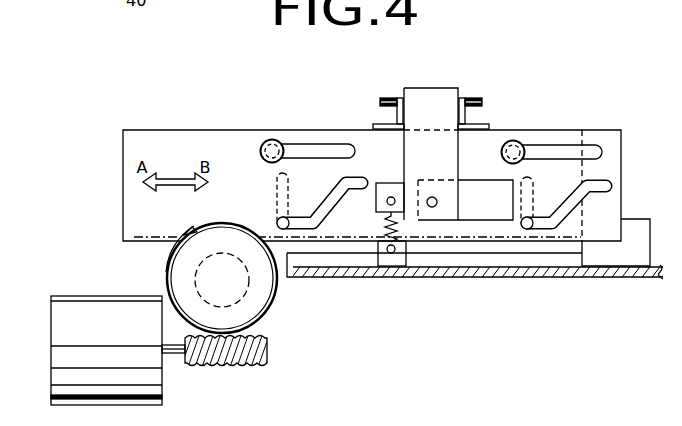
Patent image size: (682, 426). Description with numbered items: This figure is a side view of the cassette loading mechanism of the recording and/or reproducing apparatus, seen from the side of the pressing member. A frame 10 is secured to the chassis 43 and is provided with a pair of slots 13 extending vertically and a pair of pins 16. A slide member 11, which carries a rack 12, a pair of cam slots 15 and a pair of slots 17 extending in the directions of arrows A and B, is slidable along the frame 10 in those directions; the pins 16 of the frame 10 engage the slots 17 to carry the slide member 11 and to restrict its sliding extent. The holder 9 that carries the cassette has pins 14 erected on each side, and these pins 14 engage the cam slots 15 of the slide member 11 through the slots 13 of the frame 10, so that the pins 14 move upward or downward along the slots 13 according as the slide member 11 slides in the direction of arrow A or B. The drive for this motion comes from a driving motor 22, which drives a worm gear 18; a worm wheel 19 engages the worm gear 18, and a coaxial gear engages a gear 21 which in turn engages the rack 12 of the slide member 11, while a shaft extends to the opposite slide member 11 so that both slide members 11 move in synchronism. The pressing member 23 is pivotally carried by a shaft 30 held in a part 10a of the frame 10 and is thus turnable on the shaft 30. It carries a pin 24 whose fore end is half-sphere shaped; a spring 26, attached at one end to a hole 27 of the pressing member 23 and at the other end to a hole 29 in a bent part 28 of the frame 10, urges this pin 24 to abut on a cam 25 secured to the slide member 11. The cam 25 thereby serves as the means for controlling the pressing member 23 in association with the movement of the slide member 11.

The holder 9 is at (636, 218).
The frame 10 is at (545, 254).
The part of the frame 10a is at (396, 98).
The slide member 11 is at (123, 201).
The rack 12 is at (145, 243).
The slots 13 is at (277, 191).
The pins 14 is at (278, 218).
The cam slots 15 is at (331, 204).
The pins 16 is at (273, 140).
The slots 17 is at (323, 149).
The worm gear 18 is at (238, 366).
The worm wheel 19 is at (278, 300).
The gear 21 is at (168, 262).
The driving motor 22 is at (163, 377).
The pressing member 23 is at (431, 97).
The pin 24 is at (432, 197).
The cam 25 is at (483, 190).
The spring 26 is at (383, 228).
The hole 27 is at (391, 196).
The bent part 28 is at (397, 266).
The hole 29 is at (389, 253).
The shaft 30 is at (380, 101).
The chassis 43 is at (628, 276).